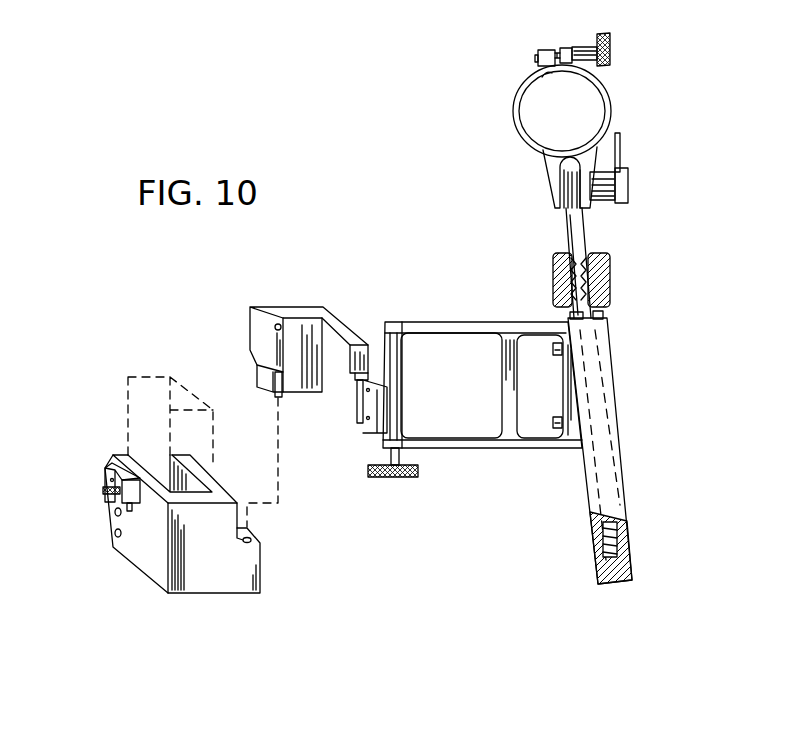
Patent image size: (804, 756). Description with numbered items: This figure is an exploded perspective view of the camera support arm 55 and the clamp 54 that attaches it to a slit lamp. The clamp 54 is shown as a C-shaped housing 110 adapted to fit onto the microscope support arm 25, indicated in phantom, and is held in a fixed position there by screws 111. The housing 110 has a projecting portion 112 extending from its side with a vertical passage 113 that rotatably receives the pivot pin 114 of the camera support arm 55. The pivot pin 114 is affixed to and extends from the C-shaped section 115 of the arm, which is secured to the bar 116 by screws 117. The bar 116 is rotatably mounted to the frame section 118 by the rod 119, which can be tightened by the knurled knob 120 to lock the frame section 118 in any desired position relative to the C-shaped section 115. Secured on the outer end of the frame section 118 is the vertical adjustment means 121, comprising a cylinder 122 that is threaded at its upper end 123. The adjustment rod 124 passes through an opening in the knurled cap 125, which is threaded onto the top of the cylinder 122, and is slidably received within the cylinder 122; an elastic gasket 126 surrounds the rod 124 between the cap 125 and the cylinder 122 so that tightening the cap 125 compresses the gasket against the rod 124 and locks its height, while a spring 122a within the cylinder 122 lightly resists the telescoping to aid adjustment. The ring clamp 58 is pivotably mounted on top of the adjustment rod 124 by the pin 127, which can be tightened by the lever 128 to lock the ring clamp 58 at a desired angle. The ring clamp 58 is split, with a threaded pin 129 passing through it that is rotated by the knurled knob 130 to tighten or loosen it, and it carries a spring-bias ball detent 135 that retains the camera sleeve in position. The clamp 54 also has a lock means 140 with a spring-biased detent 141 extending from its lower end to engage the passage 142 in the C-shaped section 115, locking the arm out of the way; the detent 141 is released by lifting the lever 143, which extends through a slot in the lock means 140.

The ring clamp 58 is at (617, 93).
The threaded pin 129 is at (555, 52).
The knurled knob 130 is at (609, 36).
The spring-bias ball detent 135 is at (545, 75).
The lever 128 is at (621, 144).
The pin 127 is at (603, 196).
The adjustment rod 124 is at (566, 233).
The knurled cap 125 is at (553, 271).
The elastic gasket 126 is at (603, 262).
The threaded upper end 123 is at (604, 289).
The vertical adjustment means 121 is at (639, 447).
The cylinder 122 is at (620, 469).
The spring 122a is at (622, 544).
The camera support arm 55 is at (475, 356).
The bar 116 is at (399, 380).
The frame section 118 is at (488, 450).
The knurled knob 120 is at (556, 417).
The rod 119 is at (397, 454).
The C-shaped section 115 is at (300, 309).
The pivot pin 114 is at (277, 390).
The passage 142 is at (363, 378).
The screws 117 is at (367, 419).
The microscope support arm 25 is at (152, 383).
The clamp 54 is at (181, 542).
The C-shaped housing 110 is at (157, 566).
The projecting portion 112 is at (256, 568).
The vertical passage 113 is at (251, 539).
The screws 111 is at (114, 533).
The lock means 140 is at (104, 464).
The lever 143 is at (103, 492).
The spring-biased detent 141 is at (130, 511).